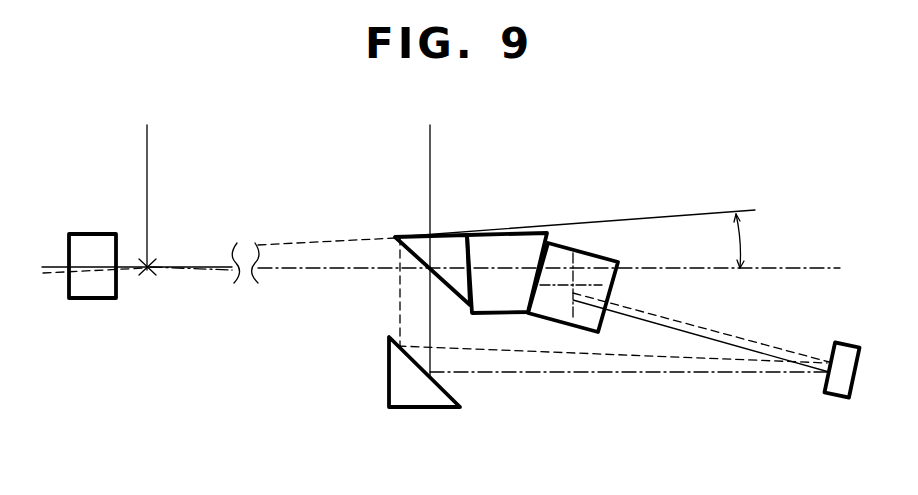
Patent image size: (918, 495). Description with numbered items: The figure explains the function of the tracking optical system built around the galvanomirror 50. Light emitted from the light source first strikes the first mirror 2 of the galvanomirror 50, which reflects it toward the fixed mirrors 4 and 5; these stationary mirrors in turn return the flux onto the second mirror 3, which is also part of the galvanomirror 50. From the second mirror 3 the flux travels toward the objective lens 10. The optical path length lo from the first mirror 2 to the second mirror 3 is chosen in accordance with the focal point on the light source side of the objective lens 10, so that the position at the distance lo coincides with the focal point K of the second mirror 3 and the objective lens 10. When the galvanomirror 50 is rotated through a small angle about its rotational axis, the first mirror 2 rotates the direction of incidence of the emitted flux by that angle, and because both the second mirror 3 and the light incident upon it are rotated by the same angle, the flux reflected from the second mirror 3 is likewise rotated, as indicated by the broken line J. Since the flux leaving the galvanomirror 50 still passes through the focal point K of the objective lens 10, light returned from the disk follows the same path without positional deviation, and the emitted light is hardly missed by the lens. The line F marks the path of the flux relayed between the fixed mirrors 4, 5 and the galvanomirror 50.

The objective lens 10 is at (98, 298).
The focal point K is at (148, 272).
The second mirror 3 is at (447, 236).
The galvanomirror 50 is at (554, 212).
The first mirror 2 is at (607, 249).
The fixed mirror 4 is at (845, 345).
The broken line J is at (588, 352).
The optical axis of detector F is at (715, 377).
The fixed mirror 5 is at (433, 407).
The optical path length lo is at (148, 148).